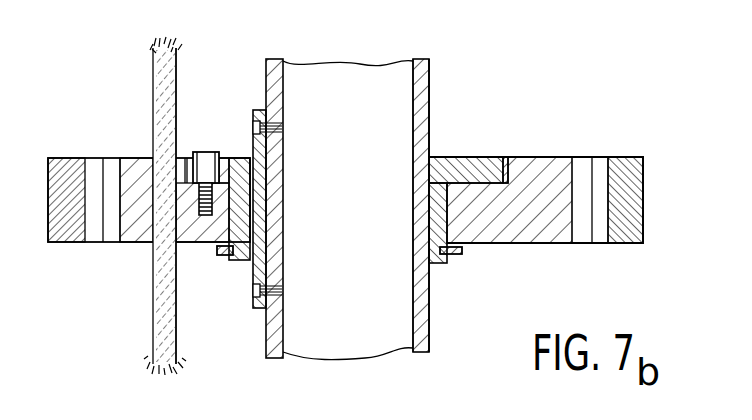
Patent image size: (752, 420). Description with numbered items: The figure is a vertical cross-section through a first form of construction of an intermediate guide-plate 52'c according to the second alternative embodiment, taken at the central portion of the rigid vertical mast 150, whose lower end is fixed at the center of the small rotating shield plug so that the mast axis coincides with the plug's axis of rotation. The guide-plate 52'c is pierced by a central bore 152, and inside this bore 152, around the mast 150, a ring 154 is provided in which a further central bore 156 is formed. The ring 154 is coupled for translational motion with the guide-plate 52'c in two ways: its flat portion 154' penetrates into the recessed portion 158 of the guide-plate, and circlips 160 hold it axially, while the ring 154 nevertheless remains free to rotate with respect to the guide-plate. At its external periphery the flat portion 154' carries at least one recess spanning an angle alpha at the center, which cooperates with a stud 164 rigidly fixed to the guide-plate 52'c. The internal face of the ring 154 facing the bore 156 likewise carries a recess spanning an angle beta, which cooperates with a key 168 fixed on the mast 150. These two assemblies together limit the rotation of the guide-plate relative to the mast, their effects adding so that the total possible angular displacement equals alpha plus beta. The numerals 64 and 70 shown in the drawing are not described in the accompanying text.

The left disc 64 is at (63, 156).
The shaft 70 is at (160, 315).
The stud 164 is at (208, 152).
The circlips 160 is at (215, 262).
The key 168 is at (253, 110).
The rigid vertical mast 150 is at (420, 90).
The central bore 152 is at (413, 226).
The central bore 156 is at (413, 180).
The recessed portion 158 is at (450, 167).
The flat portion 154' is at (550, 149).
The ring 154 is at (479, 276).
The guide-plate 52'c is at (536, 231).